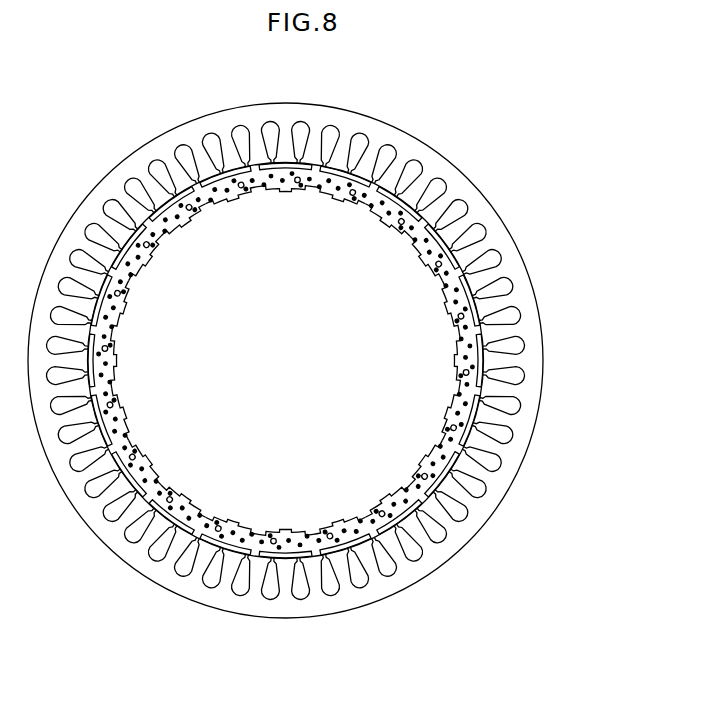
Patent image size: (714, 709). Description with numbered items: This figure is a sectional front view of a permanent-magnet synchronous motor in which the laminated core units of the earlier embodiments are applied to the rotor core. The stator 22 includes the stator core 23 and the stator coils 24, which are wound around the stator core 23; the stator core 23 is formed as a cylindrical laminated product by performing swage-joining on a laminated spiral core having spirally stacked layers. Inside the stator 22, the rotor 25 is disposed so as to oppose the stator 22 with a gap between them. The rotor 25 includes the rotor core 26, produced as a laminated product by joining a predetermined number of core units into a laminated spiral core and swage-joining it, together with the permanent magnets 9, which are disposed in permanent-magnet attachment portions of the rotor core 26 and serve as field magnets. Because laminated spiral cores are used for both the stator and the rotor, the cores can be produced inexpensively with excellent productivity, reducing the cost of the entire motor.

The permanent magnet 9 is at (313, 186).
The stator 22 is at (540, 287).
The stator core 23 is at (438, 166).
The stator coil 24 is at (313, 167).
The rotor 25 is at (445, 280).
The rotor core 26 is at (457, 352).